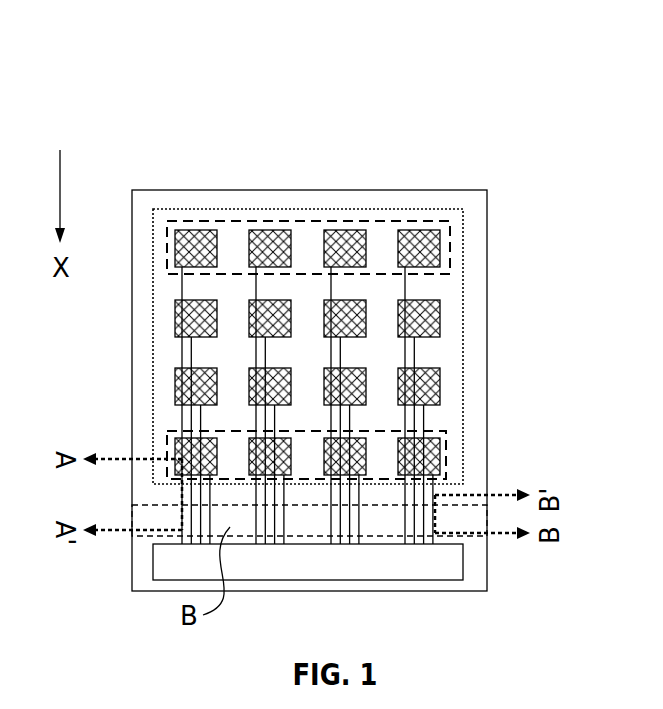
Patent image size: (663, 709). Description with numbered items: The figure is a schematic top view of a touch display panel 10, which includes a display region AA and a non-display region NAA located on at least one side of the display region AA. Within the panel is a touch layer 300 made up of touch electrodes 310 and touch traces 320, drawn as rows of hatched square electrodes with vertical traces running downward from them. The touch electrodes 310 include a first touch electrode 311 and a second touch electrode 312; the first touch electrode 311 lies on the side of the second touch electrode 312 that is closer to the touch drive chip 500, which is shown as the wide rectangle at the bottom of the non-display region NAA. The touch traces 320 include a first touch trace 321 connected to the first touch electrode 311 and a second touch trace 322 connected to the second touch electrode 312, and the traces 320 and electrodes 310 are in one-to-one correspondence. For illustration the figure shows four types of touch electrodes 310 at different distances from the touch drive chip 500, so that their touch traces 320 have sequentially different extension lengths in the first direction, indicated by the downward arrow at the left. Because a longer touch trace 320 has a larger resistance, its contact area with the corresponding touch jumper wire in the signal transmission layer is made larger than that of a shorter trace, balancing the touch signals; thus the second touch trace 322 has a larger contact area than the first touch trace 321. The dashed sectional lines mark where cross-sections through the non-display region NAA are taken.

The touch display panel 10 is at (110, 43).
The touch layer 300 is at (170, 148).
The touch electrodes 310 is at (312, 148).
The first touch electrode 311 is at (440, 432).
The second touch electrode 312 is at (450, 244).
The touch traces 320 is at (462, 147).
The first touch trace 321 is at (435, 488).
The second touch trace 322 is at (182, 357).
The touch drive chip 500 is at (463, 567).
The display region AA is at (465, 315).
The non-display region NAA is at (140, 573).